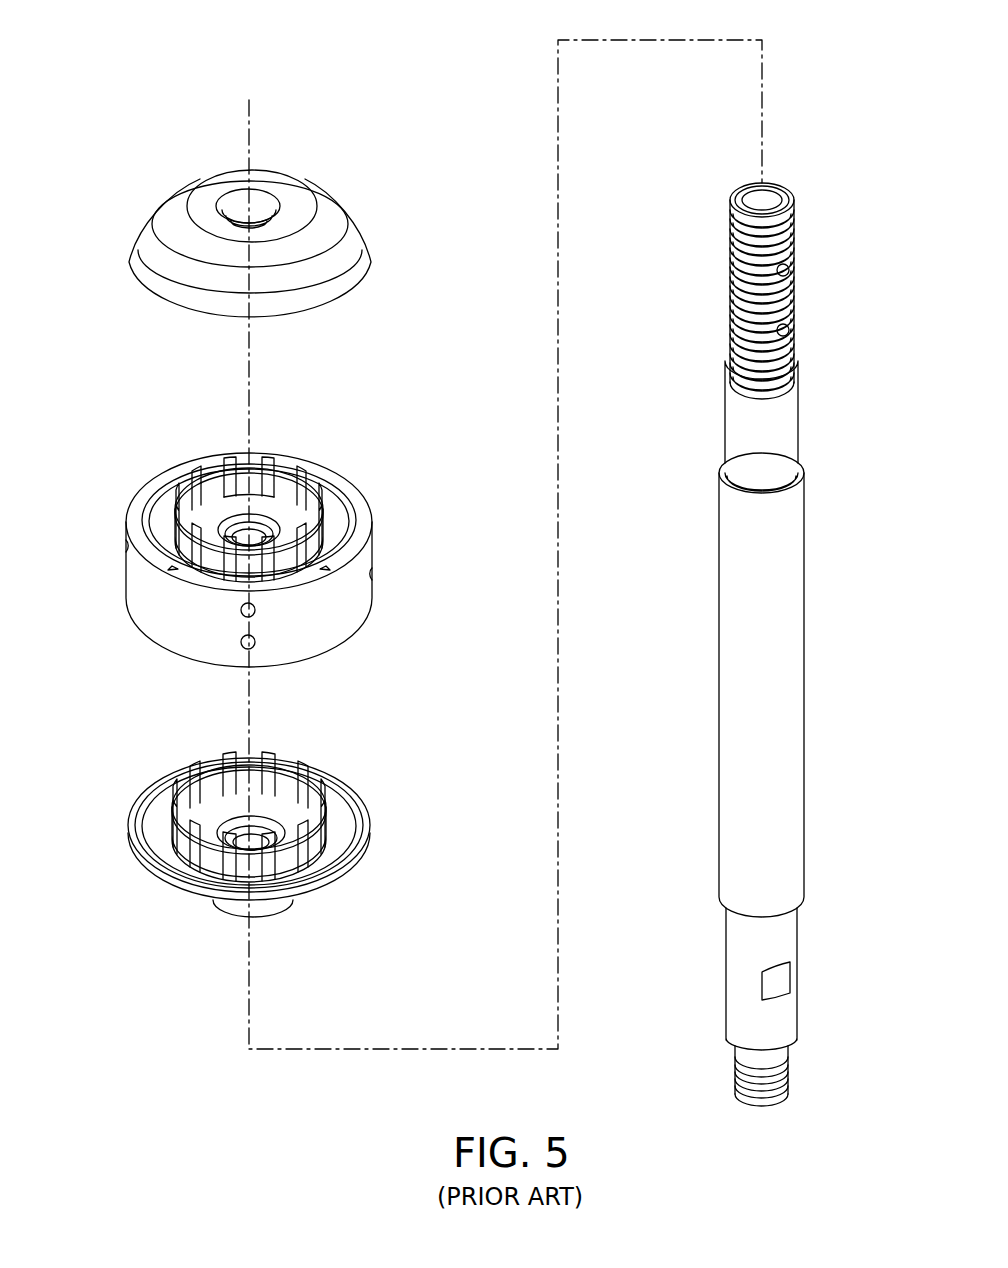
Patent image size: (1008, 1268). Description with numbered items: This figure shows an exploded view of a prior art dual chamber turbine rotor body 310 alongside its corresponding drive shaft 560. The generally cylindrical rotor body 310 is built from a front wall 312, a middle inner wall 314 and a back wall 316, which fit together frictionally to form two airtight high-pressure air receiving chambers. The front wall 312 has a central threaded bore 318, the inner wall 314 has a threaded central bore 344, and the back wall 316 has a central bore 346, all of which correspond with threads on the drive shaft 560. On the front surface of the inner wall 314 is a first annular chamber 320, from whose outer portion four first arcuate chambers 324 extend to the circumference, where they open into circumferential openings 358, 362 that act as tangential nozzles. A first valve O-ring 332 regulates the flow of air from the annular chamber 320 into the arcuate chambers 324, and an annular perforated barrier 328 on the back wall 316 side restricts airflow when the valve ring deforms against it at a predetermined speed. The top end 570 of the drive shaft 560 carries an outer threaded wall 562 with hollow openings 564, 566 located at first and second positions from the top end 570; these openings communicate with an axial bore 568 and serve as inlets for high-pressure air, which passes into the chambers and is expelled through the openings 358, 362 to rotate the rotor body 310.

The turbine rotor body 310 is at (333, 128).
The front wall 312 is at (358, 261).
The central threaded bore 318 is at (232, 199).
The middle inner wall 314 is at (142, 597).
The first arcuate chamber 324 is at (162, 512).
The circumferential opening 362 is at (126, 547).
The first annular chamber 320 is at (293, 517).
The first circumferential opening 358 is at (177, 487).
The first valve O-ring 332 is at (228, 510).
The threaded central bore 344 is at (263, 523).
The back wall 316 is at (167, 890).
The second perforated barrier 328 is at (175, 825).
The central bore 346 is at (268, 913).
The drive shaft 560 is at (798, 362).
The outer threaded wall 562 is at (795, 235).
The hollow opening 564 is at (788, 270).
The hollow opening 566 is at (788, 330).
The axial bore 568 is at (773, 193).
The top end 570 is at (750, 185).